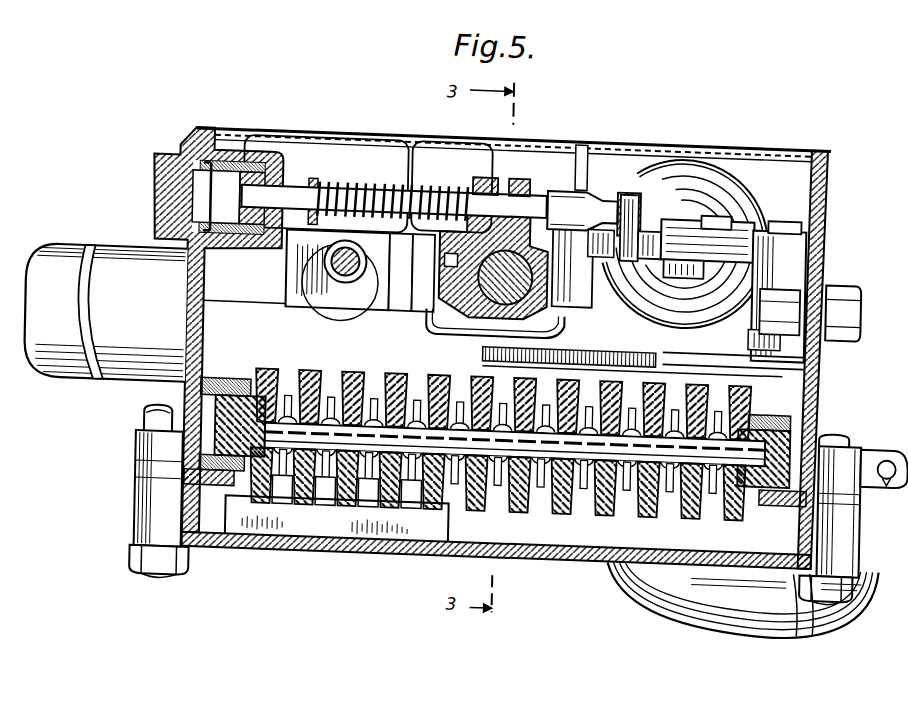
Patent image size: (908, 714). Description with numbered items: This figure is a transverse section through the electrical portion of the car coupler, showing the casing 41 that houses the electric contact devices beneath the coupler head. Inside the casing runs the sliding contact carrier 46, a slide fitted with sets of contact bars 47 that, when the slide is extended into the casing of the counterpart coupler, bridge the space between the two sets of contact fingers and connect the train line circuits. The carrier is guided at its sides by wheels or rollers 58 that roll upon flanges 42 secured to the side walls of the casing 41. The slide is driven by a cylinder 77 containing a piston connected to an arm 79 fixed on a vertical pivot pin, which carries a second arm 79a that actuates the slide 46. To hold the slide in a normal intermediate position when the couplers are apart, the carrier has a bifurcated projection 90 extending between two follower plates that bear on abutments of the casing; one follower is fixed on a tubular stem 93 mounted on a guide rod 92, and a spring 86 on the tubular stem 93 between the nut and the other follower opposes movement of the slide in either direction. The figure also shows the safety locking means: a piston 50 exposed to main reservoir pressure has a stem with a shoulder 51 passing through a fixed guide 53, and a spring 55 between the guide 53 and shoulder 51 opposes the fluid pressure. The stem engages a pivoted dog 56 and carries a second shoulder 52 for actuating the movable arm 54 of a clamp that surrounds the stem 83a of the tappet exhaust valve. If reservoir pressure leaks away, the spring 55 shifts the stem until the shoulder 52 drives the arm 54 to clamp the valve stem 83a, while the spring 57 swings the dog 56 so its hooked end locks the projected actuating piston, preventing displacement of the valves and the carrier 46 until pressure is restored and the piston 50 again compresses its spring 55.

The casing 41 is at (825, 253).
The flanges 42 is at (213, 471).
The sliding contact carrier 46 is at (742, 480).
The contact bars 47 is at (460, 373).
The piston 50 is at (260, 177).
The shoulder 51 is at (314, 173).
The shoulder 52 is at (558, 178).
The fixed guide 53 is at (476, 175).
The movable arm 54 is at (513, 174).
The spring 55 is at (381, 190).
The pivoted dog 56 is at (625, 176).
The spring 57 is at (618, 252).
The wheels or rollers 58 is at (202, 395).
The cylinder 77 is at (734, 183).
The arm 79 is at (734, 227).
The arm 79a is at (705, 344).
The stem of the tappet exhaust valve 83a is at (470, 292).
The spring 86 is at (360, 283).
The bifurcated projection 90 is at (381, 262).
The guide rod 92 is at (343, 274).
The tubular stem 93 is at (364, 274).